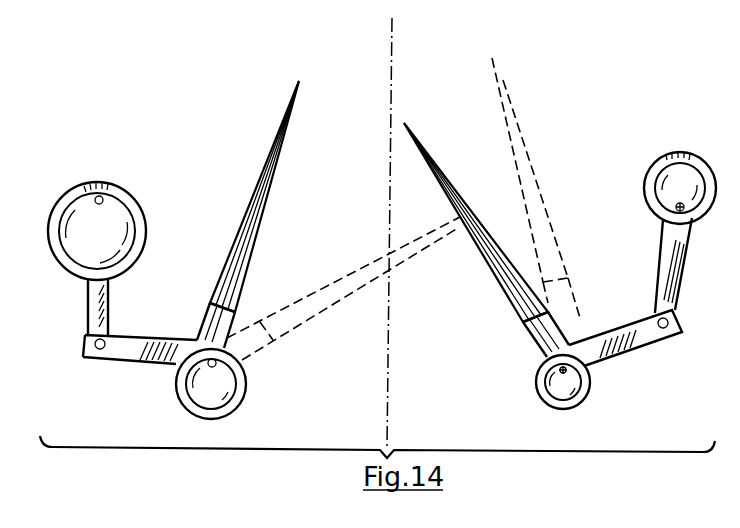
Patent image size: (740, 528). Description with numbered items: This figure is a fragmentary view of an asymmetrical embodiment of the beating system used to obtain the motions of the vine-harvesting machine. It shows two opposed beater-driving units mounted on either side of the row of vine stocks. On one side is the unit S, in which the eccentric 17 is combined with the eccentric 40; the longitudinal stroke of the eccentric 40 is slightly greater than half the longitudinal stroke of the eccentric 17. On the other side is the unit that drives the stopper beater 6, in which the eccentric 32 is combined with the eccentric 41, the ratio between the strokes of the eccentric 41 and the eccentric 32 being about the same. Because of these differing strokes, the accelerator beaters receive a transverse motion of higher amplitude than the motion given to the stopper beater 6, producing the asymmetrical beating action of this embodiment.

The left pointer unit S is at (118, 377).
The second eccentric 17 is at (127, 248).
The eccentric 40 is at (228, 387).
The stopper beater 6 is at (633, 378).
The eccentric 41 is at (565, 392).
The eccentric 32 is at (658, 200).